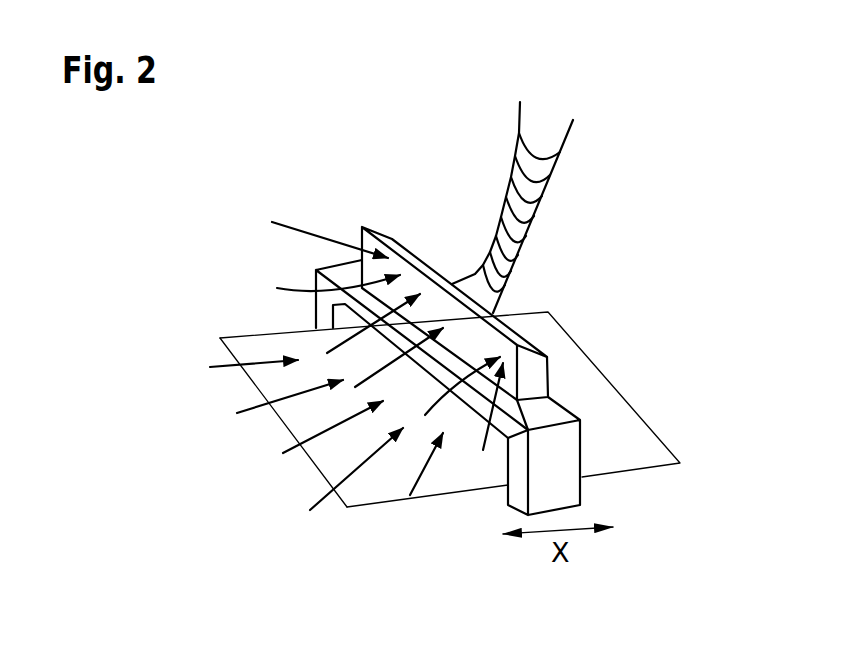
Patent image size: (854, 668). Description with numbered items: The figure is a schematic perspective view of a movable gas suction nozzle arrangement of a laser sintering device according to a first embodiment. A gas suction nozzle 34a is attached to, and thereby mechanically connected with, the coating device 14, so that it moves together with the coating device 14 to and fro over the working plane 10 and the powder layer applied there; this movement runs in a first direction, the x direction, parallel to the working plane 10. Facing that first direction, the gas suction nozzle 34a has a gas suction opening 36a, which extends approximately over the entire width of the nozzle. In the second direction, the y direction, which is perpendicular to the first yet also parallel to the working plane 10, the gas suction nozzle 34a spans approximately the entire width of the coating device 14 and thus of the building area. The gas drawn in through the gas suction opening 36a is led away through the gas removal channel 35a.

The working plane 10 is at (540, 334).
The coating device 14 is at (560, 448).
The gas suction nozzle 34a is at (535, 372).
The gas removal channel 35a is at (547, 172).
The gas suction opening 36a is at (360, 232).